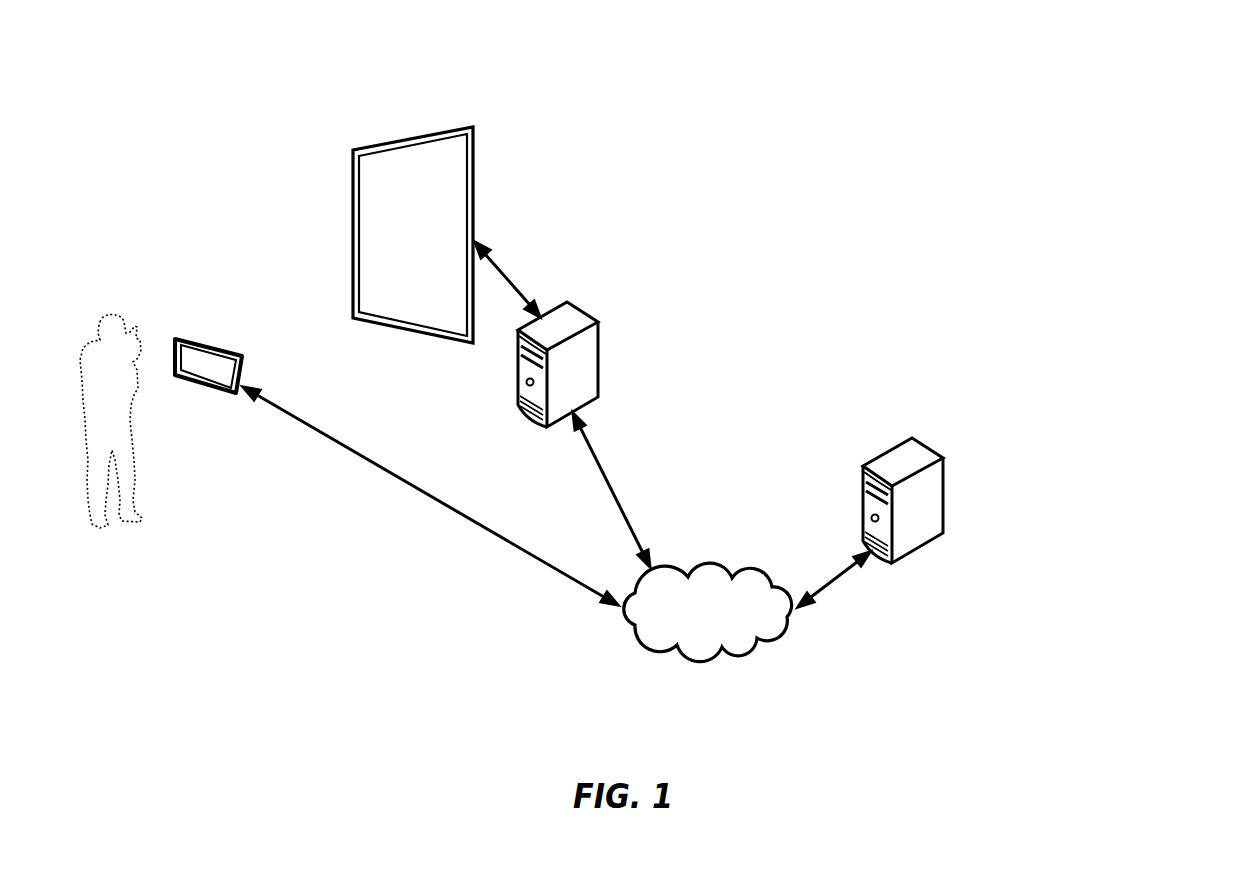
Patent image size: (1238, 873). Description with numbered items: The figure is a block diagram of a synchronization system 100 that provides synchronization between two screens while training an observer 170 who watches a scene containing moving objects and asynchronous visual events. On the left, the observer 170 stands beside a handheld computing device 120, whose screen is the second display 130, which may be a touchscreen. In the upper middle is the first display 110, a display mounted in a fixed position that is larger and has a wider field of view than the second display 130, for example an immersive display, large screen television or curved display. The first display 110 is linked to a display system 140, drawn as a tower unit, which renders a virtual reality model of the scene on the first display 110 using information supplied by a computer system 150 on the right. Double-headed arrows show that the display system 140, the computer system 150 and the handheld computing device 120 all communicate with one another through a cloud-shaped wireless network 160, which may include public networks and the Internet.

The synchronization system 100 is at (979, 113).
The first display 110 is at (452, 127).
The handheld computing device 120 is at (203, 387).
The second display 130 is at (213, 339).
The display system 140 is at (596, 322).
The computer system 150 is at (943, 485).
The wireless network 160 is at (744, 576).
The observer 170 is at (103, 310).